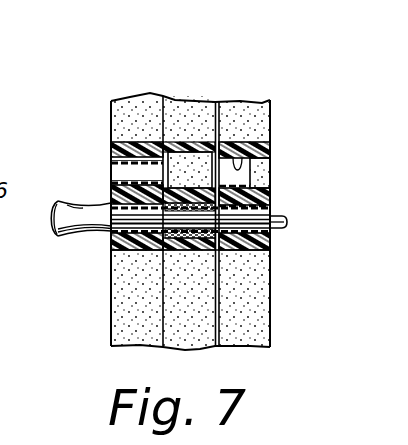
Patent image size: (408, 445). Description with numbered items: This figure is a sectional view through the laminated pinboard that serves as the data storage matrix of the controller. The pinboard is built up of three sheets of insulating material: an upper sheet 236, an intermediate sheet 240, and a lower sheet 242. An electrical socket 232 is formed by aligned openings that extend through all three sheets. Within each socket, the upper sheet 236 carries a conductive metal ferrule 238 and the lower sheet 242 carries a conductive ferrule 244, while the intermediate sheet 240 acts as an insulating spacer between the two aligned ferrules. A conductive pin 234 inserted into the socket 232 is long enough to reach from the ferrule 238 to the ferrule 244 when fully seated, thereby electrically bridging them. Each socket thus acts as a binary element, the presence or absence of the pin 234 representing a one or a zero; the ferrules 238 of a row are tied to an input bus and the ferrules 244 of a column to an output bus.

The upper sheet 236 is at (107, 107).
The conductive metal ferrule 238 is at (110, 163).
The electrical socket 232 is at (110, 183).
The conductive pin 234 is at (82, 232).
The intermediate sheet 240 is at (193, 110).
The lower sheet 242 is at (232, 104).
The conductive ferrule 244 is at (241, 158).